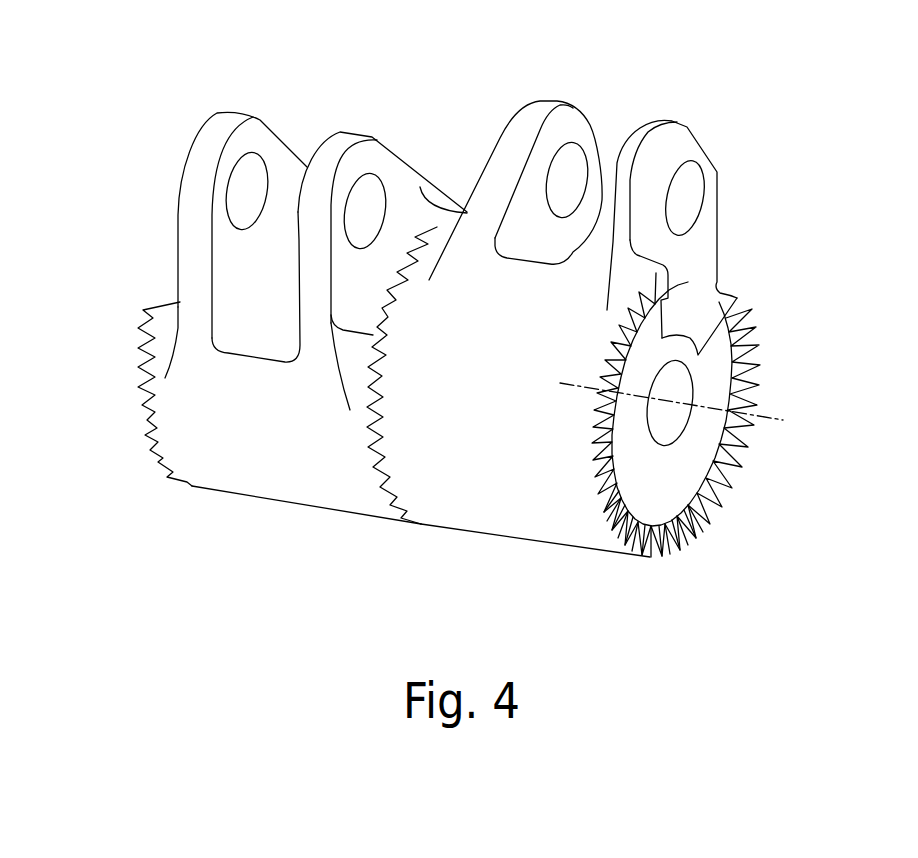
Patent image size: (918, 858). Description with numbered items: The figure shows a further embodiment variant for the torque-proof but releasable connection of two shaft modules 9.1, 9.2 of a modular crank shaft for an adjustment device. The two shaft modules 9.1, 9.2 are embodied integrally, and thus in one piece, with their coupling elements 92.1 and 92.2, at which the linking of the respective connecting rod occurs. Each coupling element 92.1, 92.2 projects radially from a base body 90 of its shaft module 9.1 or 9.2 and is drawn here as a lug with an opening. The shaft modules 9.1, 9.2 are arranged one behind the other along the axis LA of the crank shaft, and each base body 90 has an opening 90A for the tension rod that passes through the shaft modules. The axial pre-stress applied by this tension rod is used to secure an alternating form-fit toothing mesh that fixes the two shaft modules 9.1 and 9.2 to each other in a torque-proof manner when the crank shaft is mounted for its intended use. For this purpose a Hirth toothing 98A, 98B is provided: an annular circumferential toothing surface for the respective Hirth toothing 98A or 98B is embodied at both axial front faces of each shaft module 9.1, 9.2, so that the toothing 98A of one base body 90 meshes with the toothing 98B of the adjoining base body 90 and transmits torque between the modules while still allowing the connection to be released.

The base body 90 is at (450, 520).
The central bore 90A is at (678, 427).
The shaft module 9.1 is at (240, 508).
The shaft module 9.2 is at (487, 556).
The coupling element 92.1 is at (221, 124).
The coupling element 92.2 is at (557, 100).
The Hirth toothing 98A is at (147, 417).
The Hirth toothing 98B is at (368, 452).
The longitudinal axis LA is at (780, 417).